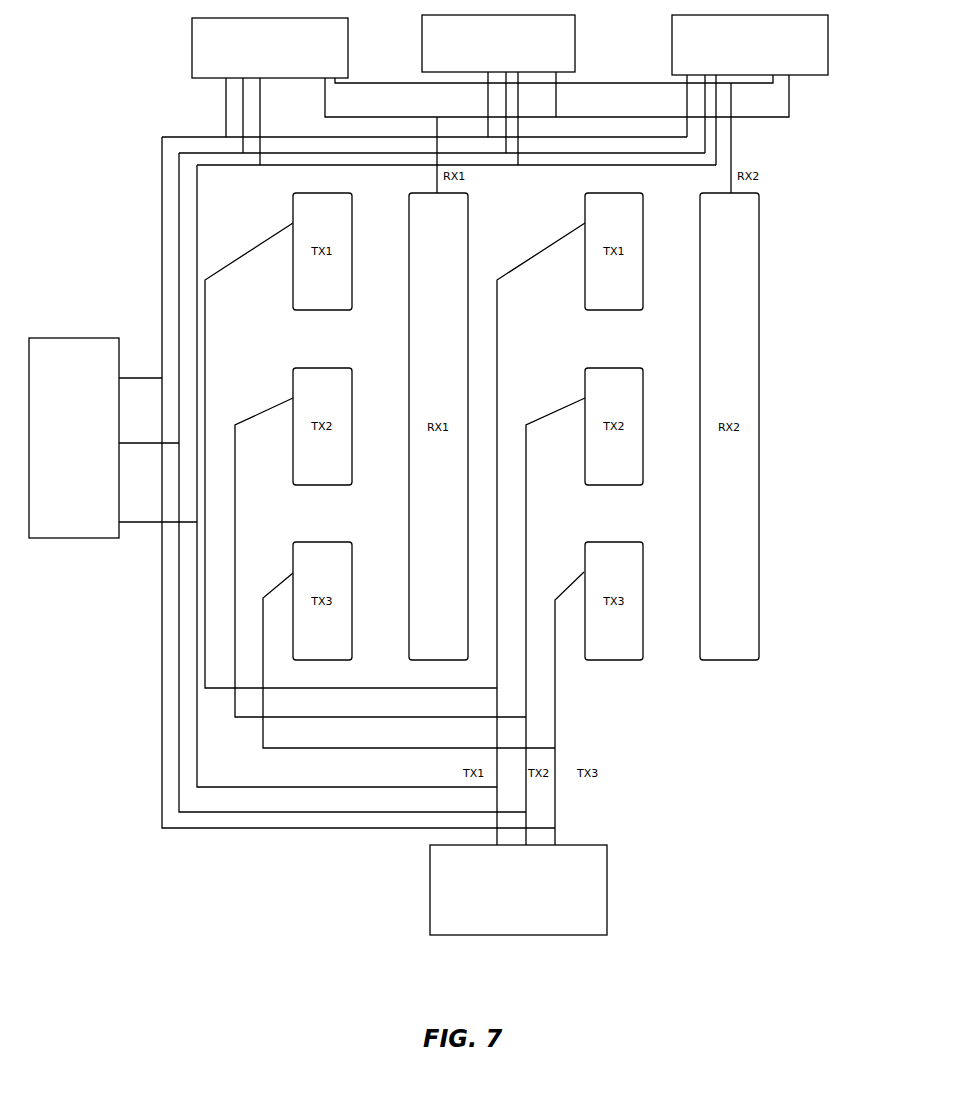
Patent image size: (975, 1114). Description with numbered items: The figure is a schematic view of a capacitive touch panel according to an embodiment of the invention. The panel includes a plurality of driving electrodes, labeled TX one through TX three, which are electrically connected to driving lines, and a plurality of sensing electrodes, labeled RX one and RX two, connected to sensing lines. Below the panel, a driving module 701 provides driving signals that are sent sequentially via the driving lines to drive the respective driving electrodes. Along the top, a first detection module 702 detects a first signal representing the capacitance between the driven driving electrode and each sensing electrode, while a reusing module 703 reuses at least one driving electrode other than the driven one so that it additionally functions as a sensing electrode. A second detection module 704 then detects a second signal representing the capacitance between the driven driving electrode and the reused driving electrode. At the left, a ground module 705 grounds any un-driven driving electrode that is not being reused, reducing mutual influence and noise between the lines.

The driving module 701 is at (607, 897).
The first detection module 702 is at (348, 68).
The reusing module 703 is at (575, 62).
The second detection module 704 is at (828, 60).
The ground module 705 is at (78, 335).